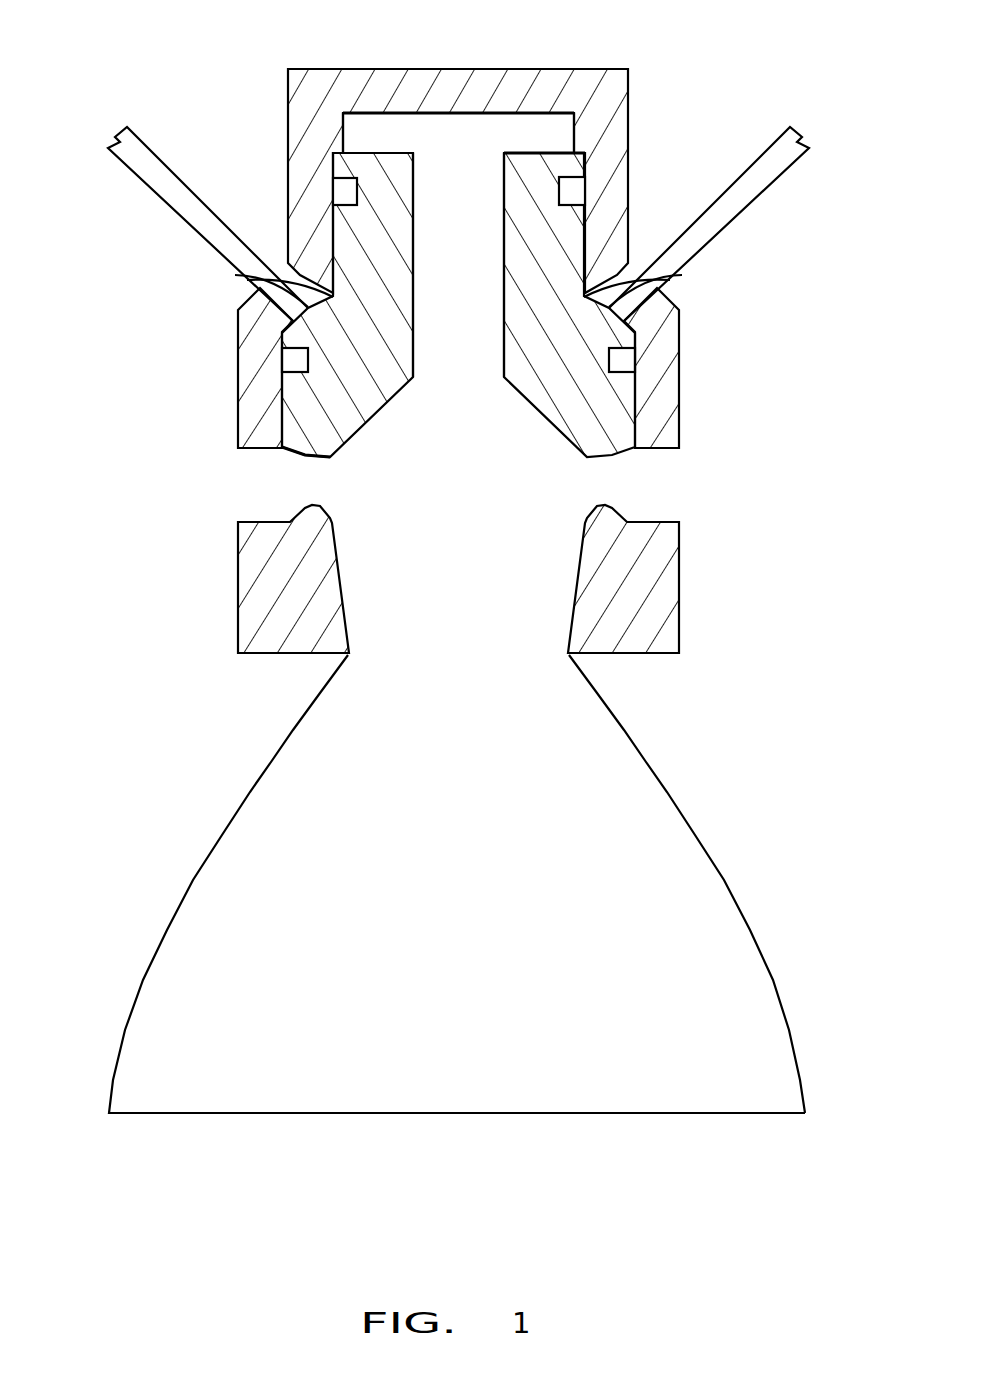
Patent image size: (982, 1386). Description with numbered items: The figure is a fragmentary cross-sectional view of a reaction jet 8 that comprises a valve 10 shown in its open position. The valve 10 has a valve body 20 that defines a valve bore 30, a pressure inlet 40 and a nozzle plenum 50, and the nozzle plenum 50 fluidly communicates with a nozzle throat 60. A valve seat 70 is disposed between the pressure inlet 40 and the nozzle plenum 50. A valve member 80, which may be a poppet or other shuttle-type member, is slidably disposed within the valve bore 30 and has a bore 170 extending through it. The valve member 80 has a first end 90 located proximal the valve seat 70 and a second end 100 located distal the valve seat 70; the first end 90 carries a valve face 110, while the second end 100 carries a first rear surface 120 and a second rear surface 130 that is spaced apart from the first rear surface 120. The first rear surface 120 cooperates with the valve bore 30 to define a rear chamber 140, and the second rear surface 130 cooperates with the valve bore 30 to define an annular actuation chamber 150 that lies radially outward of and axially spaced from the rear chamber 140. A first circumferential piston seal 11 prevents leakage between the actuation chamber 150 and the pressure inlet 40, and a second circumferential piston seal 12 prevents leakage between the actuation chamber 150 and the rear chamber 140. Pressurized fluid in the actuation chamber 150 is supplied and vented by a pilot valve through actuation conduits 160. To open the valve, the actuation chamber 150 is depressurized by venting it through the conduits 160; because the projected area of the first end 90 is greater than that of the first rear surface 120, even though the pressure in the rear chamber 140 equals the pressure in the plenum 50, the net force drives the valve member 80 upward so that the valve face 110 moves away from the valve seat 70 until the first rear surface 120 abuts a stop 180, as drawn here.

The reaction jet 8 is at (450, 1157).
The valve 10 is at (678, 50).
The first circumferential piston seal 11 is at (623, 362).
The second circumferential piston seal 12 is at (338, 187).
The valve body 20 is at (320, 70).
The valve bore 30 is at (640, 398).
The pressure inlet 40 is at (276, 497).
The nozzle plenum 50 is at (482, 633).
The nozzle throat 60 is at (574, 682).
The valve seat 70 is at (598, 507).
The valve member 80 is at (540, 278).
The first end 90 is at (375, 414).
The second end 100 is at (547, 200).
The valve face 110 is at (323, 458).
The first rear surface 120 is at (393, 130).
The second rear surface 130 is at (235, 275).
The rear chamber 140 is at (486, 149).
The annular actuation chamber 150 is at (668, 297).
The actuation conduits 160 is at (158, 183).
The bore 170 is at (486, 294).
The stop 180 is at (590, 176).